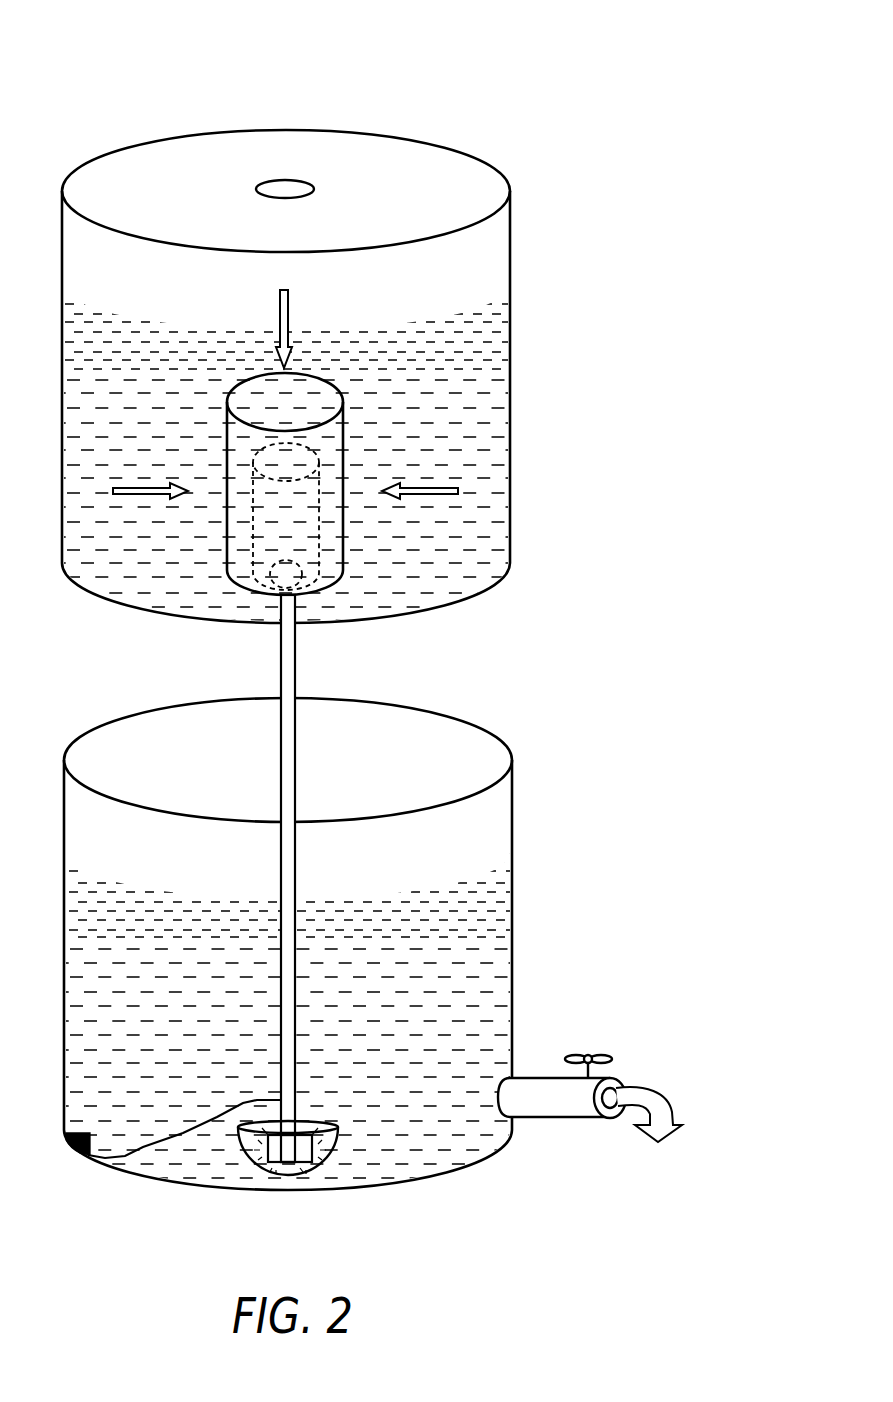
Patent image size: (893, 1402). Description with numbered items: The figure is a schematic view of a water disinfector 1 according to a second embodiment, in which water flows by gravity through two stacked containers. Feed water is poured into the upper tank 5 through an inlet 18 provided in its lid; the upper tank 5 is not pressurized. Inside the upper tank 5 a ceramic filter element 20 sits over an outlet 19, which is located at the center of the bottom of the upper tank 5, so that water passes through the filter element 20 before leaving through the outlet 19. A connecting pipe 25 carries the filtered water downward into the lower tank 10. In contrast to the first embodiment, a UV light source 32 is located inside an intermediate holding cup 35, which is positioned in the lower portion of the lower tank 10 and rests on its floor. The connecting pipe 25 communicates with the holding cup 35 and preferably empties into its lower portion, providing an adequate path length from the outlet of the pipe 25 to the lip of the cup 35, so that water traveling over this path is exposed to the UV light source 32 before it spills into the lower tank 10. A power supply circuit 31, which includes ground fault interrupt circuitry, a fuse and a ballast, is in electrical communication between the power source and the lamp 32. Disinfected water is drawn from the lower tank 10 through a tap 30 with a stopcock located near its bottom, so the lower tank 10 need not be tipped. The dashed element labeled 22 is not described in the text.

The water disinfector 1 is at (502, 97).
The upper tank 5 is at (511, 259).
The inlet 18 is at (288, 182).
The ceramic filter element 20 is at (344, 445).
The filter element 22 is at (300, 530).
The outlet 19 is at (302, 568).
The connecting pipe 25 is at (296, 680).
The lower tank 10 is at (514, 813).
The tap 30 is at (535, 1078).
The power supply circuit 31 is at (68, 1142).
The UV light source 32 is at (264, 1148).
The holding cup 35 is at (330, 1160).